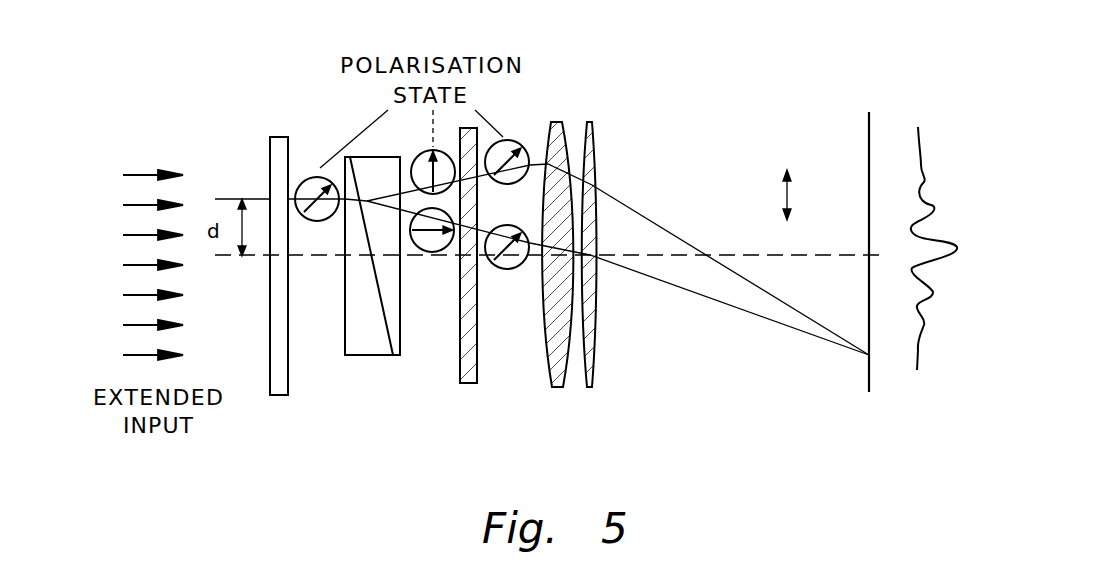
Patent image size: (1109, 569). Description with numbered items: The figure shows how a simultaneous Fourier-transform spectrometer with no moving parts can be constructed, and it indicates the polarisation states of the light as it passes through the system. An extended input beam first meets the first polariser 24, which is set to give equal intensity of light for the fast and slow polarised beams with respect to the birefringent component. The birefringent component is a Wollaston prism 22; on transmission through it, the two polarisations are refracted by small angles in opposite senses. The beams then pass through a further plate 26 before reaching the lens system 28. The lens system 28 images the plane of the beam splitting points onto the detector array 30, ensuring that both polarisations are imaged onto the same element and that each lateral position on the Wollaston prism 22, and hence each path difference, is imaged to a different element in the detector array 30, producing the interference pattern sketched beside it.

The Wollaston prism 22 is at (375, 357).
The first polariser 24 is at (270, 395).
The quarter-wave plate 26 is at (477, 383).
The lens system 28 is at (573, 100).
The detector array 30 is at (868, 383).